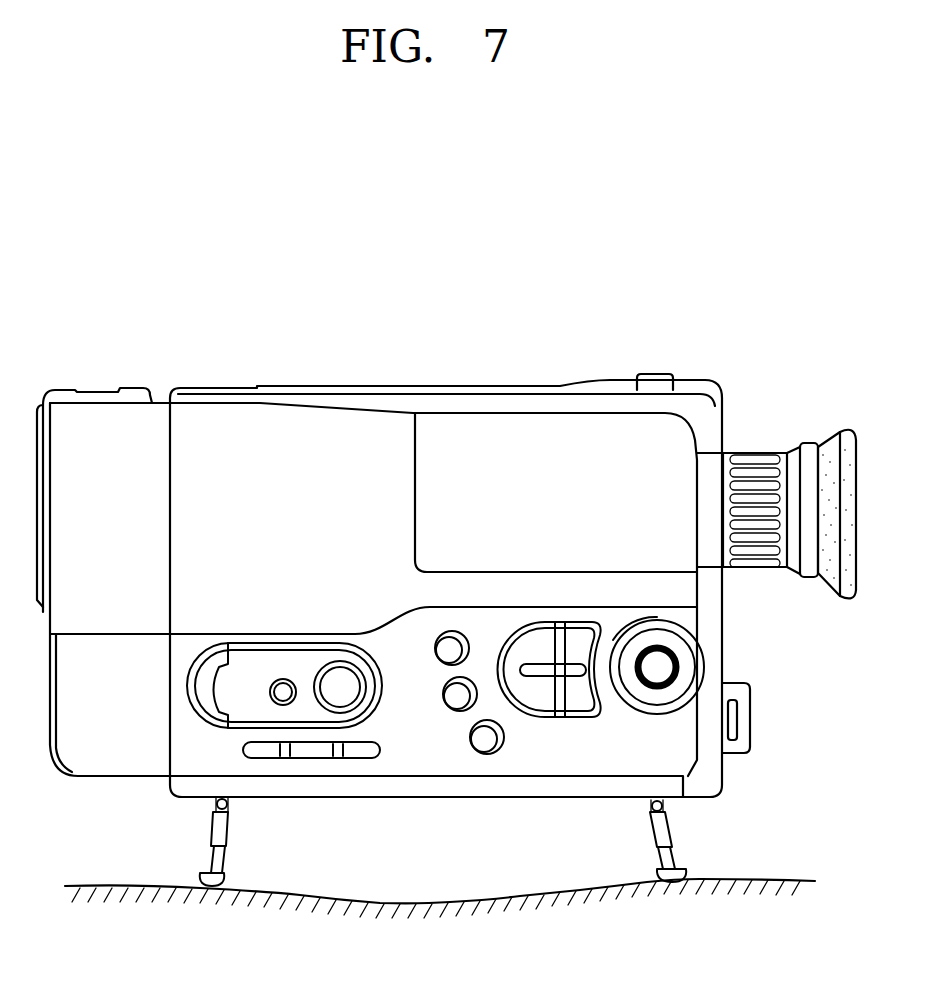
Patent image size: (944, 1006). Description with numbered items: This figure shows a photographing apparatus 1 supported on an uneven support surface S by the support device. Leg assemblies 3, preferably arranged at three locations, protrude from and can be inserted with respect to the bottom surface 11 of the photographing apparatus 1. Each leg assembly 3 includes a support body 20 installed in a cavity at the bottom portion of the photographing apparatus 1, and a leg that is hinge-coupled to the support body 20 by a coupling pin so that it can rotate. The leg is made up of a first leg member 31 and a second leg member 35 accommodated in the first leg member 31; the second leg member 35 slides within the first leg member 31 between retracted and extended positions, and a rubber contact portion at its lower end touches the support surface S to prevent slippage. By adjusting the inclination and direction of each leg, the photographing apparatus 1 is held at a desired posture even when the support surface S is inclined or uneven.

The photographing apparatus 1 is at (70, 683).
The bottom surface 11 is at (427, 798).
The leg assembly 3 is at (228, 852).
The support body 20 is at (216, 803).
The first leg member 31 is at (207, 824).
The second leg member 35 is at (207, 857).
The support surface S is at (778, 880).